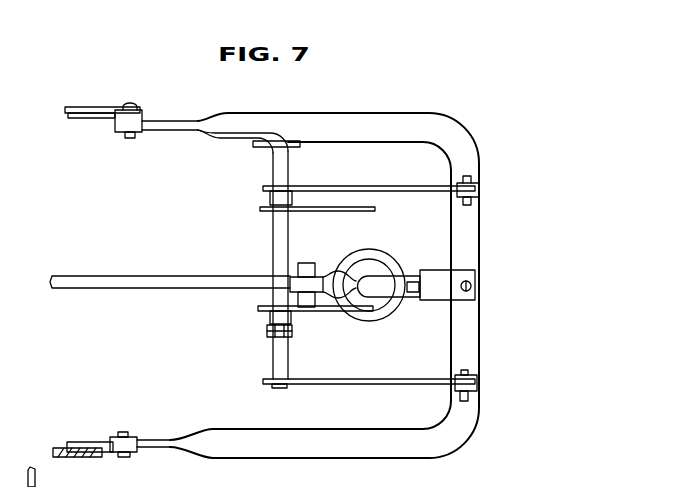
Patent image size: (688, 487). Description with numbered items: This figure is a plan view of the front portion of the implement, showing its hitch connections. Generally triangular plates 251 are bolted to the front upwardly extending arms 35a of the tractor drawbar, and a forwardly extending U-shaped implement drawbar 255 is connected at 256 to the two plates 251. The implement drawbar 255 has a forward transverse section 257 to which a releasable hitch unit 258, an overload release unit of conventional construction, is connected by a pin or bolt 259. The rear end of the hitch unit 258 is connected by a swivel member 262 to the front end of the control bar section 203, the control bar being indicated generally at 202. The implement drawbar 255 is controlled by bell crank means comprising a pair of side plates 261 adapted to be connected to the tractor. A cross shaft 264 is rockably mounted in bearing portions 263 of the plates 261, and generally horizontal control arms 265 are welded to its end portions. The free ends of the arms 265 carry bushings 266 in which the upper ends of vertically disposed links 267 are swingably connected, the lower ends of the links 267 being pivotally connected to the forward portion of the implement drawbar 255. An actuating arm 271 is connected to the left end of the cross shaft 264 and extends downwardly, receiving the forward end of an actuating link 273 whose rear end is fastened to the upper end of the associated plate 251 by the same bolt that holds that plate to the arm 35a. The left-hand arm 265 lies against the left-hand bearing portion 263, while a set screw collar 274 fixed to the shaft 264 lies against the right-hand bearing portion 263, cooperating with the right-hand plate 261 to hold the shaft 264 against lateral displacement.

The front upwardly extending arm 35a is at (70, 96).
The rod 202 is at (151, 275).
The control bar section 203 is at (87, 290).
The generally triangular plate 251 is at (88, 118).
The U-shaped implement drawbar 255 is at (356, 112).
The connection 256 is at (134, 105).
The forward transverse section 257 is at (470, 224).
The releasable hitch unit 258 is at (438, 277).
The pin or bolt 259 is at (472, 285).
The side plate 261 is at (337, 211).
The swivel member 262 is at (368, 252).
The bearing portion 263 is at (272, 200).
The cross shaft 264 is at (273, 245).
The control arm 265 is at (377, 186).
The bushing 266 is at (478, 187).
The vertically disposed link 267 is at (462, 180).
The actuating arm 271 is at (257, 148).
The actuating link 273 is at (186, 121).
The set screw collar 274 is at (268, 333).